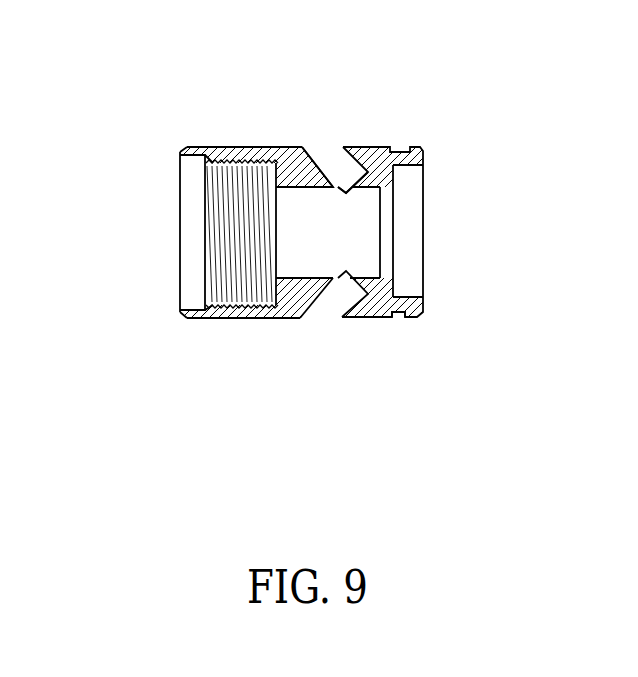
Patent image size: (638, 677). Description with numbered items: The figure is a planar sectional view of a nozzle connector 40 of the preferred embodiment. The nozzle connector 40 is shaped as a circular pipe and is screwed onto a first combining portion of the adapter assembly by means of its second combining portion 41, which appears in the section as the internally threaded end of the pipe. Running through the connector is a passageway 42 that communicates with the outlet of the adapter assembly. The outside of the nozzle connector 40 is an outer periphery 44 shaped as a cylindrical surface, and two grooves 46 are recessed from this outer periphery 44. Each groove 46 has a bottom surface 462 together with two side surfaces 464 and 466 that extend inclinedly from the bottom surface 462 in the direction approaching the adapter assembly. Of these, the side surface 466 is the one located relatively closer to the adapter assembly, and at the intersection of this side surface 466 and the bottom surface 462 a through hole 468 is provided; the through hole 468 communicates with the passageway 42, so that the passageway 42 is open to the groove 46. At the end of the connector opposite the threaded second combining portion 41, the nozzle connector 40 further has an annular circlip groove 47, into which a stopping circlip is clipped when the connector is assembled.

The nozzle connector 40 is at (168, 193).
The second combining portion 41 is at (223, 300).
The passageway 42 is at (342, 247).
The outer periphery 44 is at (228, 322).
The groove 46 is at (327, 320).
The annular circlip groove 47 is at (399, 320).
The bottom surface 462 is at (344, 192).
The side surface 464 is at (355, 157).
The side surface 466 is at (308, 182).
The through hole 468 is at (346, 197).